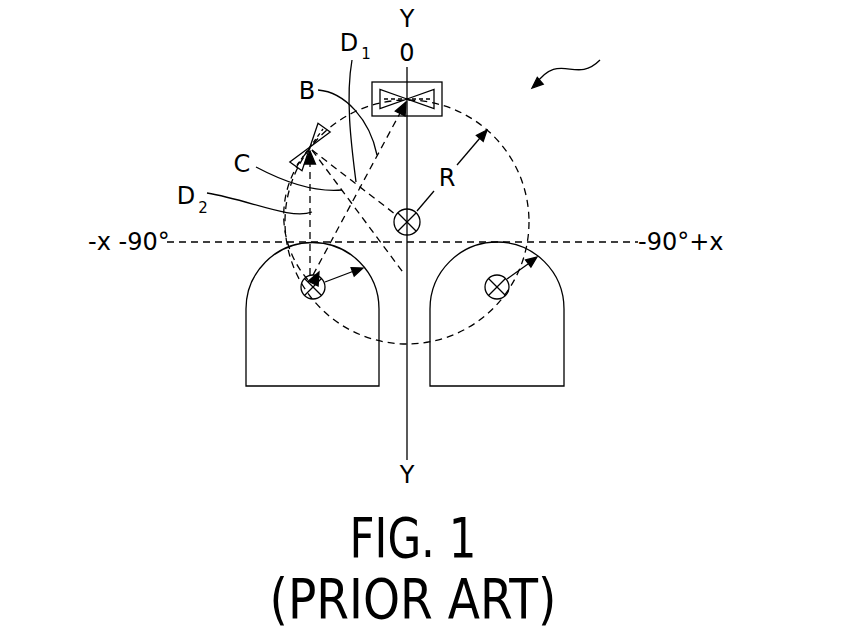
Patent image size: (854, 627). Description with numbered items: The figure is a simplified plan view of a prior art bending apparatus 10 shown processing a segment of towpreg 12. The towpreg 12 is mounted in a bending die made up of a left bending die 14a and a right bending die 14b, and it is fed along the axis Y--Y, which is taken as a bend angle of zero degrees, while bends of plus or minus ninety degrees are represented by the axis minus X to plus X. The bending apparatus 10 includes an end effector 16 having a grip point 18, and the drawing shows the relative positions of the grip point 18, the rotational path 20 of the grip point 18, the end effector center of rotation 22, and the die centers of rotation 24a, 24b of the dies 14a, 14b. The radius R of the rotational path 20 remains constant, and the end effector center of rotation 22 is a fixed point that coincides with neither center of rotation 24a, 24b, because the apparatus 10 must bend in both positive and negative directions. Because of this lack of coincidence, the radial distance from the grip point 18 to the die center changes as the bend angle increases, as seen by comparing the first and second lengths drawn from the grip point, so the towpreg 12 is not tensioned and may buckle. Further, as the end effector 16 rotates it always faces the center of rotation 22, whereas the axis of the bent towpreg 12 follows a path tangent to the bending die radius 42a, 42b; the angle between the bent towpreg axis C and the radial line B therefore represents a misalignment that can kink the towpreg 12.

The bending apparatus 10 is at (580, 59).
The towpreg 12 is at (407, 422).
The left bending die 14a is at (298, 388).
The right bending die 14b is at (536, 387).
The end effector 16 is at (422, 82).
The grip point 18 is at (437, 98).
The rotational path 20 is at (315, 135).
The end effector center of rotation 22 is at (421, 221).
The die center of rotation 24a is at (310, 300).
The die center of rotation 24b is at (509, 282).
The bending die radius 42a is at (343, 282).
The bending die radius 42b is at (515, 270).